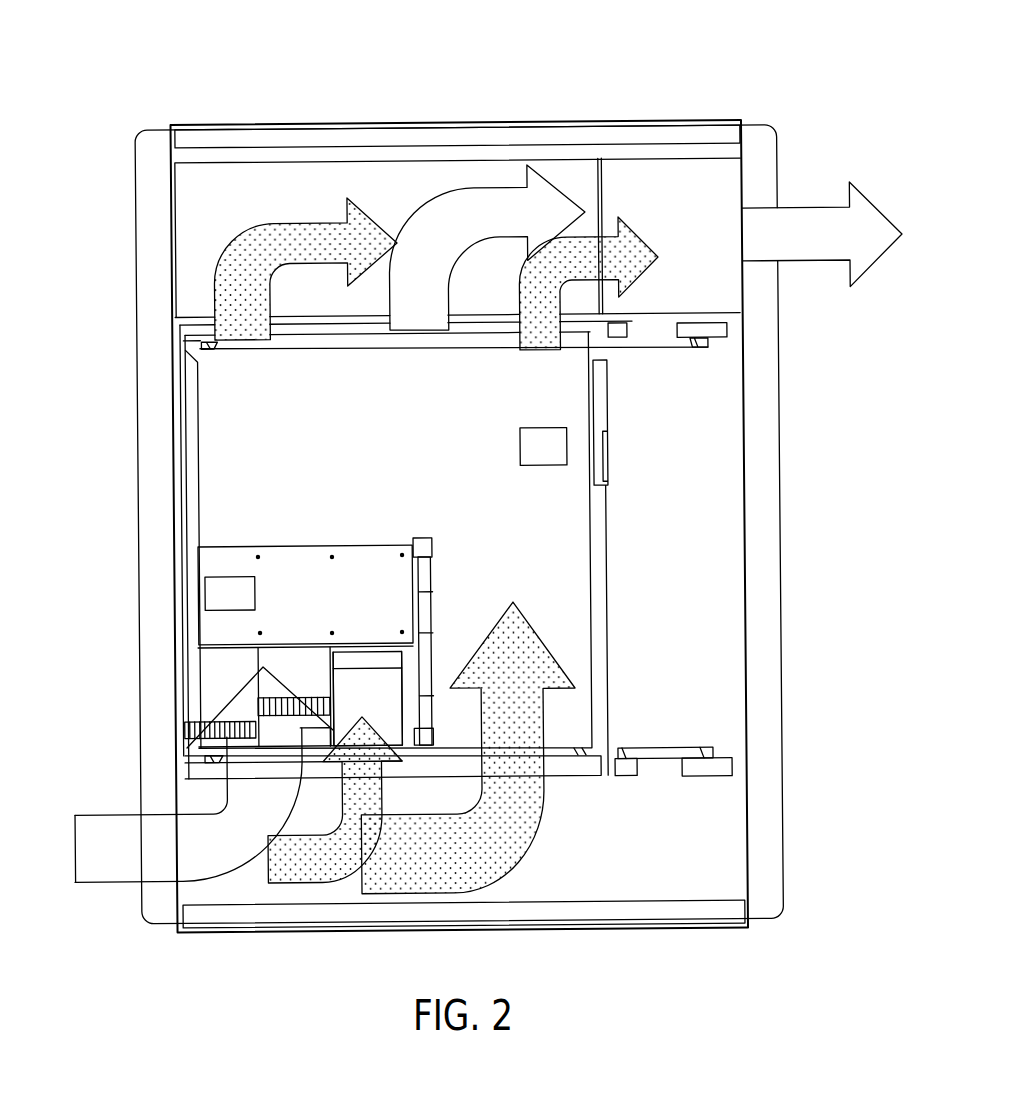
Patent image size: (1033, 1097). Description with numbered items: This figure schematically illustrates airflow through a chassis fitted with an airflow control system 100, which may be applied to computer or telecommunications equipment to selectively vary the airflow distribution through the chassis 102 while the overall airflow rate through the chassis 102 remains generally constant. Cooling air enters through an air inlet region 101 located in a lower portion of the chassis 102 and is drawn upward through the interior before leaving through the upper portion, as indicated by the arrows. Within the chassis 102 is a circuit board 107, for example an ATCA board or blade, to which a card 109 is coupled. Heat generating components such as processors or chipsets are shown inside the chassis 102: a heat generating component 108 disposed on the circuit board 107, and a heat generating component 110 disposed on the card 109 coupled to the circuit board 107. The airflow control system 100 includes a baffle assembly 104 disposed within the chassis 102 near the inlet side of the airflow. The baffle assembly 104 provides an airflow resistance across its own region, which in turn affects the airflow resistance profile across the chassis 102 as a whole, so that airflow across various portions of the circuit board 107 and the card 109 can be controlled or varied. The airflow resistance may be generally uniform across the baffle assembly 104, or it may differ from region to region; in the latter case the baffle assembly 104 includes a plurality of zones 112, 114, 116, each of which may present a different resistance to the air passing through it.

The airflow control system 100 is at (88, 94).
The air inlet region 101 is at (73, 855).
The chassis 102 is at (138, 219).
The baffle assembly 104 is at (211, 676).
The circuit board 107 is at (264, 393).
The heat generating component 108 is at (539, 448).
The card 109 is at (213, 556).
The heat generating component 110 is at (227, 591).
The zone 112 is at (206, 698).
The zone 114 is at (289, 674).
The zone 116 is at (380, 692).